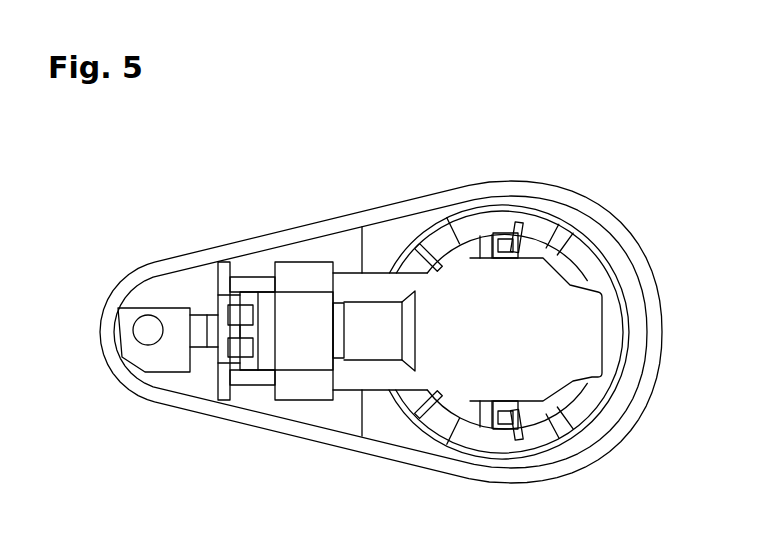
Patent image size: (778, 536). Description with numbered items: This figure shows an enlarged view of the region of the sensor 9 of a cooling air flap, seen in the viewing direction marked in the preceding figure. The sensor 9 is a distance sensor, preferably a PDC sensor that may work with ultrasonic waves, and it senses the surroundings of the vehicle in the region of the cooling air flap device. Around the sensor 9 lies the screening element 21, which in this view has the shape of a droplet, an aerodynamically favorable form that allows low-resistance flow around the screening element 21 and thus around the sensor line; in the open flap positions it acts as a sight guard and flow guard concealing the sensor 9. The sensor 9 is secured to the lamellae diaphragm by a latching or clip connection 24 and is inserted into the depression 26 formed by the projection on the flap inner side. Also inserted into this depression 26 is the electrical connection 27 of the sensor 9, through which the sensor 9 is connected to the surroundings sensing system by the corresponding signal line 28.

The sensor 9 is at (465, 250).
The screening element 21 is at (607, 214).
The latching connection or clip connection 24 is at (497, 236).
The depression 26 is at (350, 408).
The electrical connection 27 is at (293, 278).
The signal line 28 is at (200, 331).